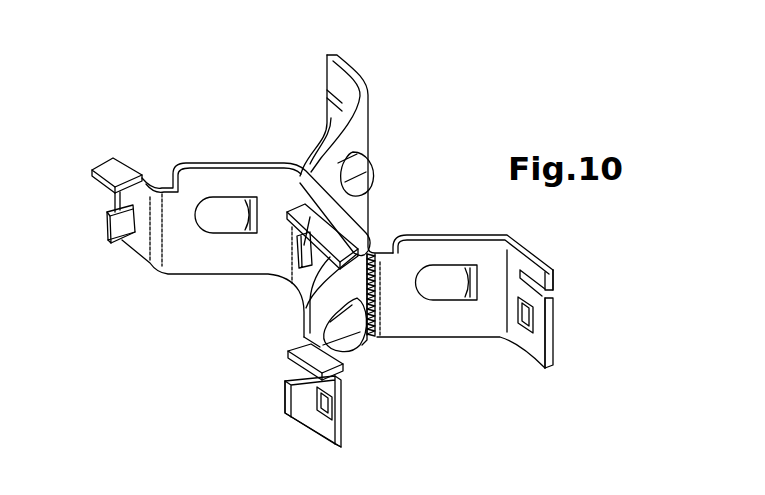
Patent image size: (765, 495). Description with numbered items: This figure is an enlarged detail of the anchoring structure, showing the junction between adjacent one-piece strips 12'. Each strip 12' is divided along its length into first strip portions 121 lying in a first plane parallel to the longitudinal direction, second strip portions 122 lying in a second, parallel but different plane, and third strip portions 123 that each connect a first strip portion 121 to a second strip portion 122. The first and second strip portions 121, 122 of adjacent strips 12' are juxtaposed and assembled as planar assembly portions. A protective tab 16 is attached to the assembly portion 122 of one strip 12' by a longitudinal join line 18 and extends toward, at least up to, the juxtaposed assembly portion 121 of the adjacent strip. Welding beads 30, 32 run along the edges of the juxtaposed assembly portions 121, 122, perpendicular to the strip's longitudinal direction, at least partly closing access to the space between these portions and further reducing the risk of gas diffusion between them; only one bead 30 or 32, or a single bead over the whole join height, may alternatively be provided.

The strip 12' is at (462, 347).
The protective tab 16 is at (105, 162).
The longitudinal join line 18 is at (125, 163).
The welding bead 30 is at (377, 275).
The welding bead 32 is at (380, 317).
The first strip portion 121 is at (323, 211).
The second strip portion 122 is at (373, 250).
The third strip portion 123 is at (345, 355).